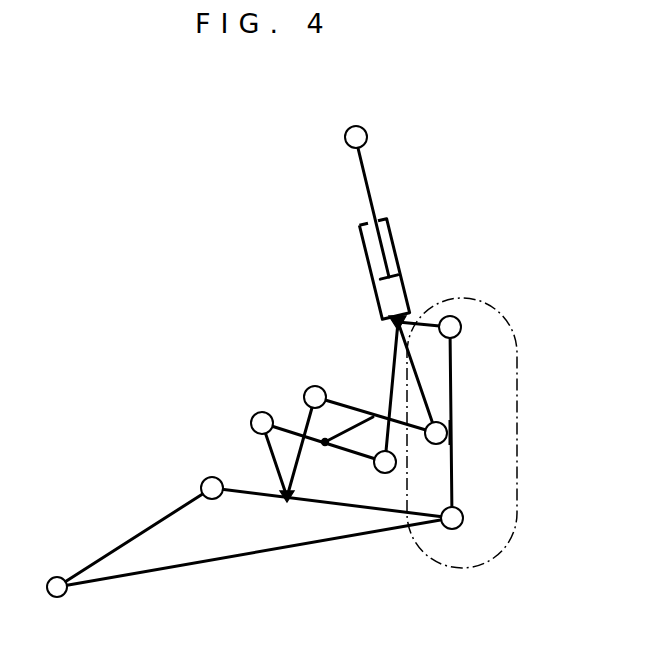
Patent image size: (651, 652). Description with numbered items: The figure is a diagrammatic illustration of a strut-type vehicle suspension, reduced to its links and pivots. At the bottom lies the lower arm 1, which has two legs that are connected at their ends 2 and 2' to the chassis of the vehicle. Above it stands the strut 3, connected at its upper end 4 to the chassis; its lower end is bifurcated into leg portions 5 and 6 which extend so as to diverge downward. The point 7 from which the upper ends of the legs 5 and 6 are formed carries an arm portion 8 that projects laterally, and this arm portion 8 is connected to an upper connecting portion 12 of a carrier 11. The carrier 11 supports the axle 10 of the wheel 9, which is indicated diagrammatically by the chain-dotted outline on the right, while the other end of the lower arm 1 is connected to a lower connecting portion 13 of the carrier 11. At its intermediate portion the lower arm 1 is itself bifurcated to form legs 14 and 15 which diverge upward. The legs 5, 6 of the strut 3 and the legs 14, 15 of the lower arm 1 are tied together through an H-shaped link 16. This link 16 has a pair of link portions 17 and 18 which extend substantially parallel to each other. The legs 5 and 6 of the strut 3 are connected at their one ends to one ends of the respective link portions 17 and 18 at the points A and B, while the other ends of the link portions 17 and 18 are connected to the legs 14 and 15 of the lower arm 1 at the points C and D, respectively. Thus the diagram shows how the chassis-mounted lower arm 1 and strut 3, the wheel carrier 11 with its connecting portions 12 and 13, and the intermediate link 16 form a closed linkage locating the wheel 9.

The lower arm 1 is at (115, 547).
The end of lower arm 2 is at (73, 605).
The end of lower arm 2' is at (190, 475).
The strut 3 is at (398, 238).
The upper end of strut 4 is at (366, 128).
The leg portion 5 is at (391, 374).
The leg portion 6 is at (418, 373).
The point 7 is at (388, 325).
The arm portion 8 is at (417, 318).
The wheel 9 is at (519, 400).
The axle 10 is at (455, 430).
The carrier 11 is at (453, 382).
The upper connecting portion 12 is at (455, 317).
The lower connecting portion 13 is at (463, 517).
The leg 14 is at (269, 458).
The leg 15 is at (302, 420).
The H-shaped link 16 is at (358, 428).
The link portion 17 is at (292, 440).
The link portion 18 is at (343, 404).
The connection point A is at (384, 473).
The connection point B is at (430, 445).
The connection point C is at (253, 419).
The connection point D is at (313, 386).